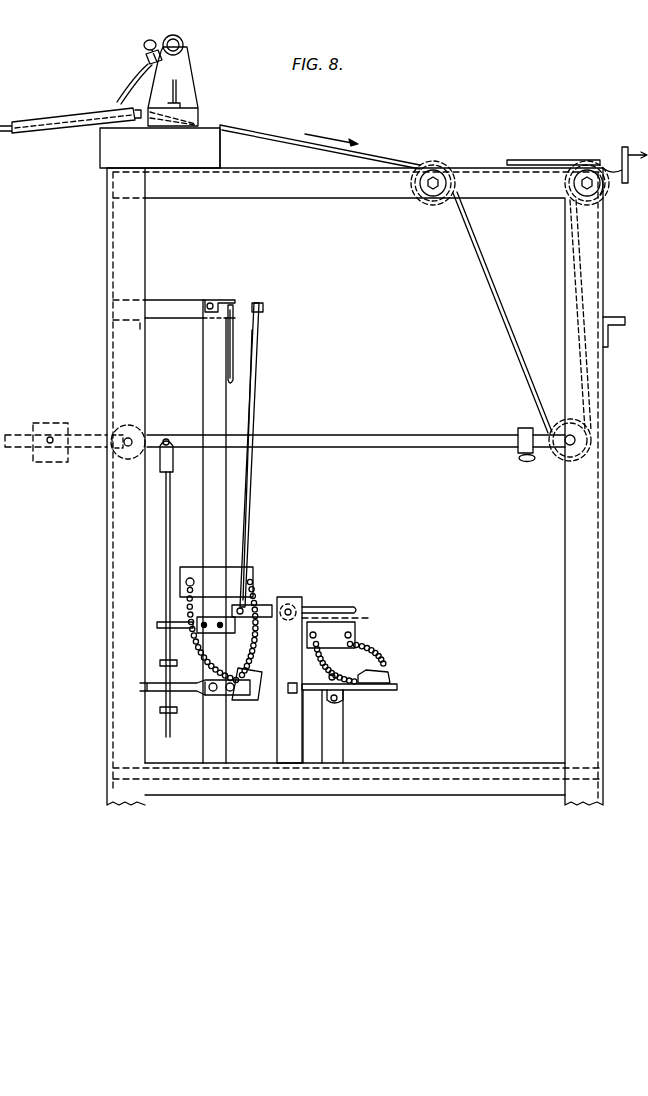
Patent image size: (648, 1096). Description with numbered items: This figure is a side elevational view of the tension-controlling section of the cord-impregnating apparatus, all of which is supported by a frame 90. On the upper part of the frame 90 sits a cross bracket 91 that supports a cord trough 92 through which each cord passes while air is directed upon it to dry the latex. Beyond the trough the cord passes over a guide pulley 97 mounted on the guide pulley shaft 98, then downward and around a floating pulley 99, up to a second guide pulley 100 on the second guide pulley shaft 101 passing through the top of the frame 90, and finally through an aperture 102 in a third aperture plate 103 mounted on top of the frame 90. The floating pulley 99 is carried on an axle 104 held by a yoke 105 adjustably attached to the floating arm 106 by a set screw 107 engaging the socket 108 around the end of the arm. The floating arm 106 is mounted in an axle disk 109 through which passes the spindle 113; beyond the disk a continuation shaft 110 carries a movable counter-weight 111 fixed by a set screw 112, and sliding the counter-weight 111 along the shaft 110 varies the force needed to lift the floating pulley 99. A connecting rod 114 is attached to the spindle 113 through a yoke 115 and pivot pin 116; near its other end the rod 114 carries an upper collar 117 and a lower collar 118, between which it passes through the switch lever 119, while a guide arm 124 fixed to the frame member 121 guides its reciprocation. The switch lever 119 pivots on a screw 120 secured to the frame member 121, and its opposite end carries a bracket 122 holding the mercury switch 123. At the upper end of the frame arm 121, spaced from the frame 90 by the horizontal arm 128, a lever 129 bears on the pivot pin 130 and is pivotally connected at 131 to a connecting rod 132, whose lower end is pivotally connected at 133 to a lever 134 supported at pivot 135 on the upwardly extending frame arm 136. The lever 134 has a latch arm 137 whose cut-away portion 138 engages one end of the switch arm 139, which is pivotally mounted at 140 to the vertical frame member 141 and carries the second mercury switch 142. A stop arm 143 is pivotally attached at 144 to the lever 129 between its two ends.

The frame 90 is at (107, 237).
The cross bracket 91 is at (107, 155).
The cord trough 92 is at (52, 132).
The guide pulley 97 is at (434, 164).
The guide pulley shaft 98 is at (433, 195).
The floating pulley 99 is at (560, 462).
The second guide pulley 100 is at (603, 191).
The second guide pulley shaft 101 is at (582, 188).
The aperture 102 is at (617, 160).
The third aperture plate 103 is at (625, 148).
The axle 104 is at (570, 420).
The yoke 105 is at (535, 425).
The floating arm 106 is at (378, 435).
The set screw 107 is at (522, 458).
The socket 108 is at (518, 430).
The axle disk 109 is at (138, 420).
The continuation shaft 110 is at (87, 450).
The counter-weight 111 is at (42, 462).
The set screw 112 is at (48, 437).
The spindle 113 is at (126, 438).
The connecting rod 114 is at (172, 514).
The yoke 115 is at (173, 460).
The pivot pin 116 is at (166, 438).
The upper collar 117 is at (160, 663).
The lower collar 118 is at (160, 710).
The switch lever 119 is at (155, 685).
The screw 120 is at (215, 692).
The frame member 121 is at (203, 349).
The bracket 122 is at (252, 703).
The mercury switch 123 is at (248, 668).
The guide arm 124 is at (158, 623).
The horizontal arm 128 is at (163, 297).
The lever 129 is at (255, 303).
The pivot pin 130 is at (211, 303).
The pivotal connection 131 is at (263, 303).
The connecting rod 132 is at (258, 338).
The pivotal connection 133 is at (243, 607).
The lever 134 is at (352, 607).
The pivot 135 is at (291, 608).
The frame arm 136 is at (300, 748).
The latch arm 137 is at (362, 617).
The cut-away portion 138 is at (297, 697).
The switch arm 139 is at (397, 687).
The pivot 140 is at (345, 700).
The vertical frame member 141 is at (338, 731).
The mercury switch 142 is at (388, 680).
The stop arm 143 is at (235, 368).
The pivot 144 is at (232, 302).